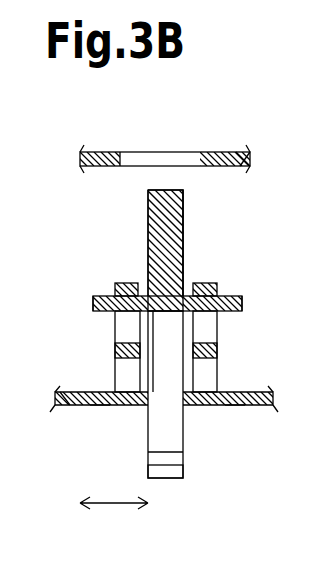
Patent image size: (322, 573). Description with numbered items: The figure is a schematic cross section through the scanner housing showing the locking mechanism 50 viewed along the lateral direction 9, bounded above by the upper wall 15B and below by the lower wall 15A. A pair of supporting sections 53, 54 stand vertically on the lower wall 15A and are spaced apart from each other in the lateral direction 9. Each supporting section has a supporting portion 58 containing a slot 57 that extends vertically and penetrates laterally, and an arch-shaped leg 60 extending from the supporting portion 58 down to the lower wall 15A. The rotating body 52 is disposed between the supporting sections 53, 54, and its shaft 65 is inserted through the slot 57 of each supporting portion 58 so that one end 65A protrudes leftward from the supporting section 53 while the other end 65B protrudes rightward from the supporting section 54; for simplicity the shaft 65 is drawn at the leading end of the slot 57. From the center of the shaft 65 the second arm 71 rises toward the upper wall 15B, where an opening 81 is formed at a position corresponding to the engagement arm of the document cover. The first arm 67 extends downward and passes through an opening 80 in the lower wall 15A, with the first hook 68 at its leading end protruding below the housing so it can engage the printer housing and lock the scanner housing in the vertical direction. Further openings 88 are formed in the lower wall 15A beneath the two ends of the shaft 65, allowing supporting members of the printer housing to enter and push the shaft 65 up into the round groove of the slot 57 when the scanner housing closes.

The upper wall 15B is at (227, 152).
The opening 81 is at (126, 156).
The locking mechanism 50 is at (84, 202).
The second arm 71 is at (148, 191).
The rotating body 52 is at (199, 218).
The supporting section 53 is at (125, 253).
The supporting section 54 is at (205, 253).
The supporting portion 58 is at (115, 284).
The shaft 65 is at (106, 297).
The one end of the shaft 65A is at (93, 303).
The another end of the shaft 65B is at (242, 305).
The slot 57 is at (106, 345).
The arch-shaped leg 60 is at (115, 372).
The opening 80 is at (148, 420).
The first arm 67 is at (183, 432).
The first hook 68 is at (183, 468).
The lower wall 15A is at (58, 397).
The openings 88 is at (100, 406).
The lateral direction 9 is at (115, 505).